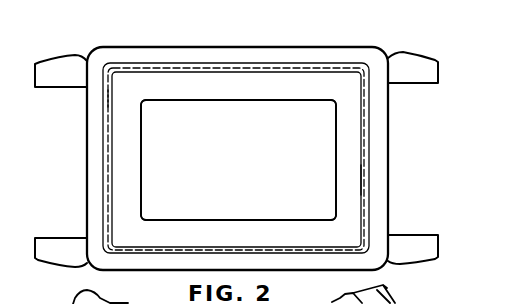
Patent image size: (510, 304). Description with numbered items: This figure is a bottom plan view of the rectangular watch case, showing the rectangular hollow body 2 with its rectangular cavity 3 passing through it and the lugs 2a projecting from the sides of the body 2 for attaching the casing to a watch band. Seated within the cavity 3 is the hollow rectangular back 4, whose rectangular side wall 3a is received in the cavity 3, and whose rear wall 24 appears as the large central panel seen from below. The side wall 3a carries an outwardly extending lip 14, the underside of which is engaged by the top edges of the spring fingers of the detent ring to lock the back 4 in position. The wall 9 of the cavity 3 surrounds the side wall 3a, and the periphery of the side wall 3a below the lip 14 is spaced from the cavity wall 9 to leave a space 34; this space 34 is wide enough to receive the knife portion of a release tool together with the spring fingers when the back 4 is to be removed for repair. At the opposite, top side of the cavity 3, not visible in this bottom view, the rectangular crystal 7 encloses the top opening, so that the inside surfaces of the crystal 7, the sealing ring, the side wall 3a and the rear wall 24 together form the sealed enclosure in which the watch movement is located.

The rectangular hollow body 2 is at (102, 133).
The lugs 2a is at (52, 65).
The rectangular cavity 3 is at (368, 222).
The rectangular side wall 3a is at (110, 157).
The hollow rectangular back 4 is at (303, 83).
The cavity wall 9 is at (367, 187).
The outwardly extending lip 14 is at (107, 99).
The rear wall 24 is at (318, 147).
The space 34 is at (150, 68).
The rectangular crystal 7 is at (64, 297).